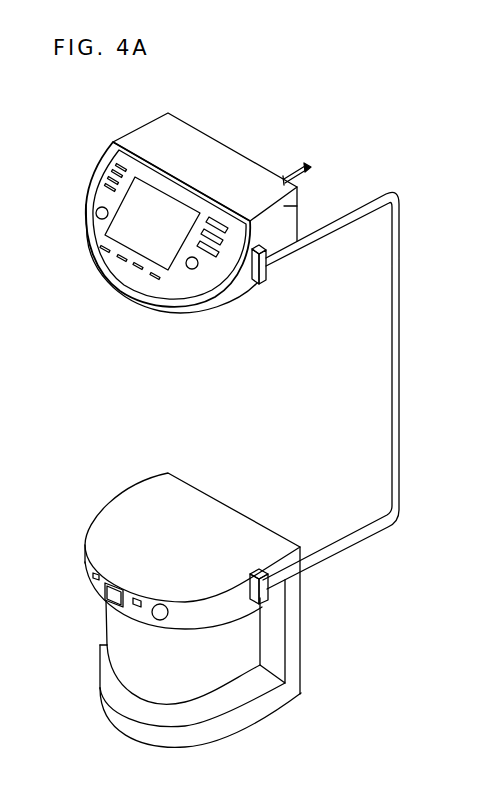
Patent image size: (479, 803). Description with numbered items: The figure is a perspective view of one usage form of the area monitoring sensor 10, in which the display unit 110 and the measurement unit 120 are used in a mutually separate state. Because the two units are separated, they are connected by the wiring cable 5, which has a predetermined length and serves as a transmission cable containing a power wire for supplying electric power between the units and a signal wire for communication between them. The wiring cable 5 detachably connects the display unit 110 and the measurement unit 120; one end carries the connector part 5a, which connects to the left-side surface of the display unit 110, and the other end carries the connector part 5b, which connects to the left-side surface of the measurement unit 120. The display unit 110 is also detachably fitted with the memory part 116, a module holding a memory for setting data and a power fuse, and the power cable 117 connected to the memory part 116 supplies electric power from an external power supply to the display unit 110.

The area monitoring sensor 10 is at (373, 134).
The display unit 110 is at (233, 150).
The memory part 116 is at (296, 206).
The power cable 117 is at (298, 176).
The wiring cable 5 is at (399, 277).
The connector part 5a is at (263, 282).
The connector part 5b is at (252, 574).
The measurement unit 120 is at (300, 641).